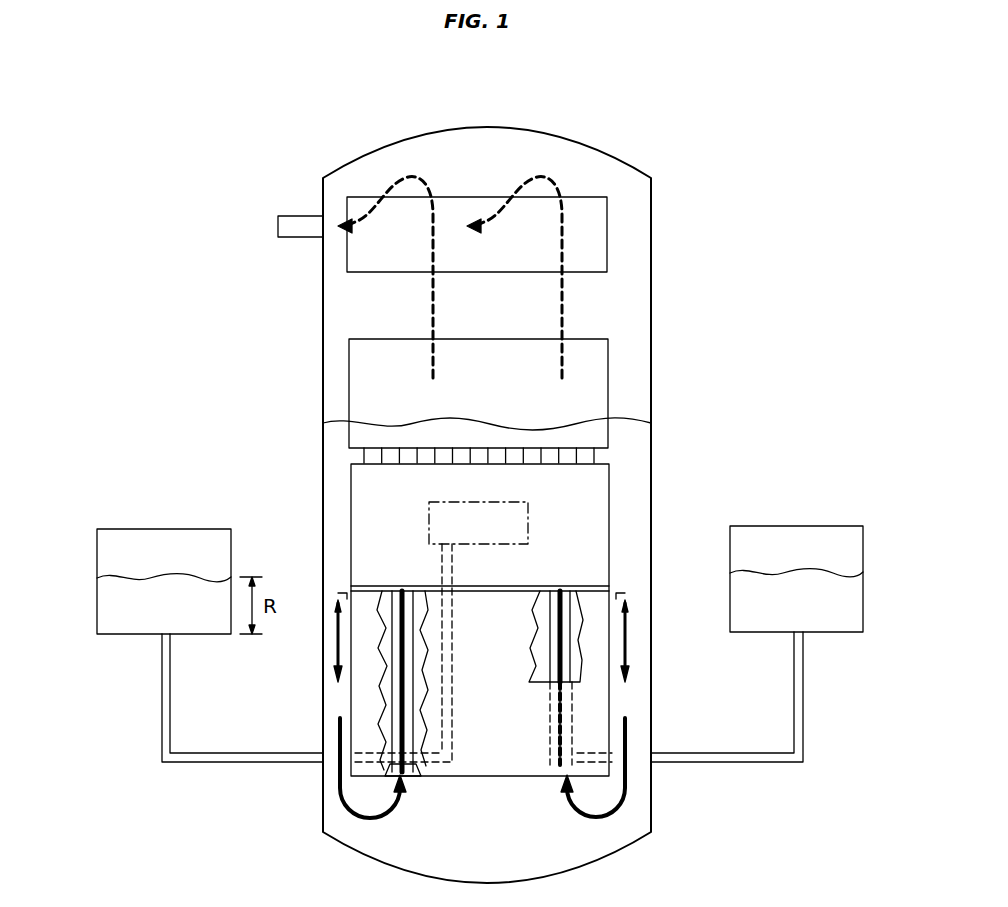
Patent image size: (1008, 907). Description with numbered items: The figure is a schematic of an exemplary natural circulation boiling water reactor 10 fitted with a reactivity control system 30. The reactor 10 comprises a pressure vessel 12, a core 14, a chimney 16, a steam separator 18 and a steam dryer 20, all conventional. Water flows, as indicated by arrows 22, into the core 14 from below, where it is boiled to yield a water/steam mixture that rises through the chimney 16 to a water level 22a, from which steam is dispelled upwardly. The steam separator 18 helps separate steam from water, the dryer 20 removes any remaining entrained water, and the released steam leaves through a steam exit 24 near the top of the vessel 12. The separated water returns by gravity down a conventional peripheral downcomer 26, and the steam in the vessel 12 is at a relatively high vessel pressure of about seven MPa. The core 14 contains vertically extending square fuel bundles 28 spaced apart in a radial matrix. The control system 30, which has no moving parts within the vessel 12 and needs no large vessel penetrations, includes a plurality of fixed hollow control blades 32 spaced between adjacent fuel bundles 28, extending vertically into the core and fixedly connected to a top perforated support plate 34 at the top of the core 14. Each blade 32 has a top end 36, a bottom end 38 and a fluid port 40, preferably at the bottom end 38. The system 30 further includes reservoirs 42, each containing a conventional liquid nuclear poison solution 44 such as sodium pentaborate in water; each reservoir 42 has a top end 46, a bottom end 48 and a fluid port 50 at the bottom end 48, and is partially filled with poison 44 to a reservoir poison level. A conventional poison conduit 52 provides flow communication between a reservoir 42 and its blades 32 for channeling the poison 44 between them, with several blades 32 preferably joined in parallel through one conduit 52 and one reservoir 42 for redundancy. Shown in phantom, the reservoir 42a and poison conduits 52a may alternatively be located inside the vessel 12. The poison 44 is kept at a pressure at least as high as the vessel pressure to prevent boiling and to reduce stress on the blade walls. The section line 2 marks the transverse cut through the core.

The natural circulation boiling water reactor 10 is at (514, 488).
The pressure vessel 12 is at (651, 292).
The core 14 is at (651, 706).
The chimney 16 is at (609, 498).
The steam separator 18 is at (607, 357).
The steam dryer 20 is at (607, 222).
The arrows 22 is at (365, 815).
The water level 22a is at (618, 425).
The steam exit 24 is at (278, 216).
The peripheral downcomer 26 is at (323, 706).
The fuel bundles 28 is at (423, 667).
The reactivity control system 30 is at (243, 522).
The hollow control blades 32 is at (548, 642).
The top perforated support plate 34 is at (595, 585).
The top end 36 is at (390, 588).
The bottom end 38 is at (415, 778).
The fluid port 40 is at (390, 735).
The reservoirs 42 is at (90, 541).
The reservoir 42a is at (528, 506).
The liquid nuclear poison solution 44 is at (105, 606).
The top end 46 is at (163, 528).
The bottom end 48 is at (118, 636).
The fluid port 50 is at (160, 636).
The poison conduit 52 is at (162, 717).
The poison conduits 52a is at (452, 695).
The section line 2 is at (478, 635).